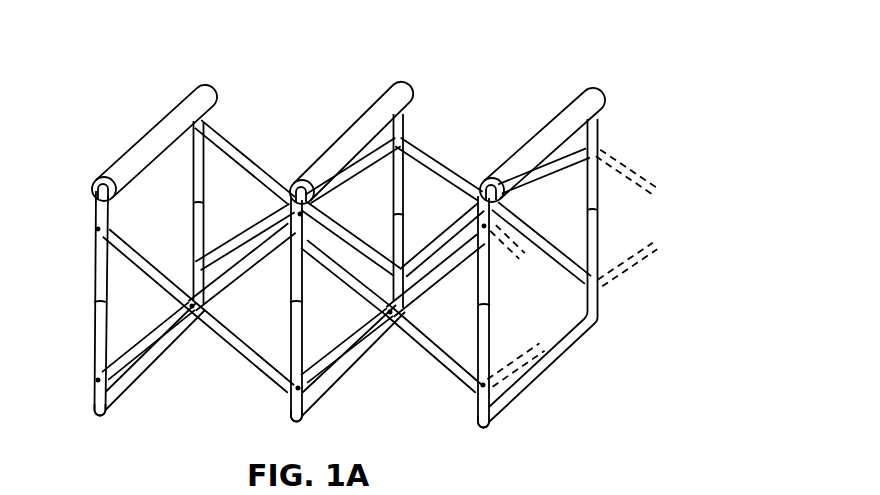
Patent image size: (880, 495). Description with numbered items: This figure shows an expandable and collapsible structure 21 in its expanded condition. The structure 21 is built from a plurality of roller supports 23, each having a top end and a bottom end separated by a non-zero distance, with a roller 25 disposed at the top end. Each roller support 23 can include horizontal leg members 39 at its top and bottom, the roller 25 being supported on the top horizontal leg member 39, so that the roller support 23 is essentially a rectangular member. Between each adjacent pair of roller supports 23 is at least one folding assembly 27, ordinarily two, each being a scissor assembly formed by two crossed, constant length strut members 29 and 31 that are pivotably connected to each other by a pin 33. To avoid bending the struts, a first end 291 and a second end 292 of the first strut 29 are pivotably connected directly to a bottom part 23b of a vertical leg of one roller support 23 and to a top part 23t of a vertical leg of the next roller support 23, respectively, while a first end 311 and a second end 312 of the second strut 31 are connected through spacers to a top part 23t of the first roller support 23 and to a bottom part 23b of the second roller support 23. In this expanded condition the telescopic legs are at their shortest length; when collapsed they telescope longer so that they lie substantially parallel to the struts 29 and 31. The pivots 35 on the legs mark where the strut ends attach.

The expandable and collapsible structure 21 is at (665, 130).
The roller support 23 is at (94, 268).
The top part of vertical leg member 23t is at (92, 200).
The bottom part of vertical leg member 23b is at (96, 400).
The roller 25 is at (170, 107).
The folding assembly 27 is at (267, 161).
The first strut member 29 is at (293, 335).
The first end of first strut 291 is at (113, 374).
The second end of first strut 292 is at (279, 247).
The second strut member 31 is at (293, 304).
The first end of second strut 311 is at (110, 228).
The second end of second strut 312 is at (270, 375).
The pin 33 is at (191, 300).
The post pivot 35 is at (96, 228).
The horizontal leg member 39 is at (482, 186).